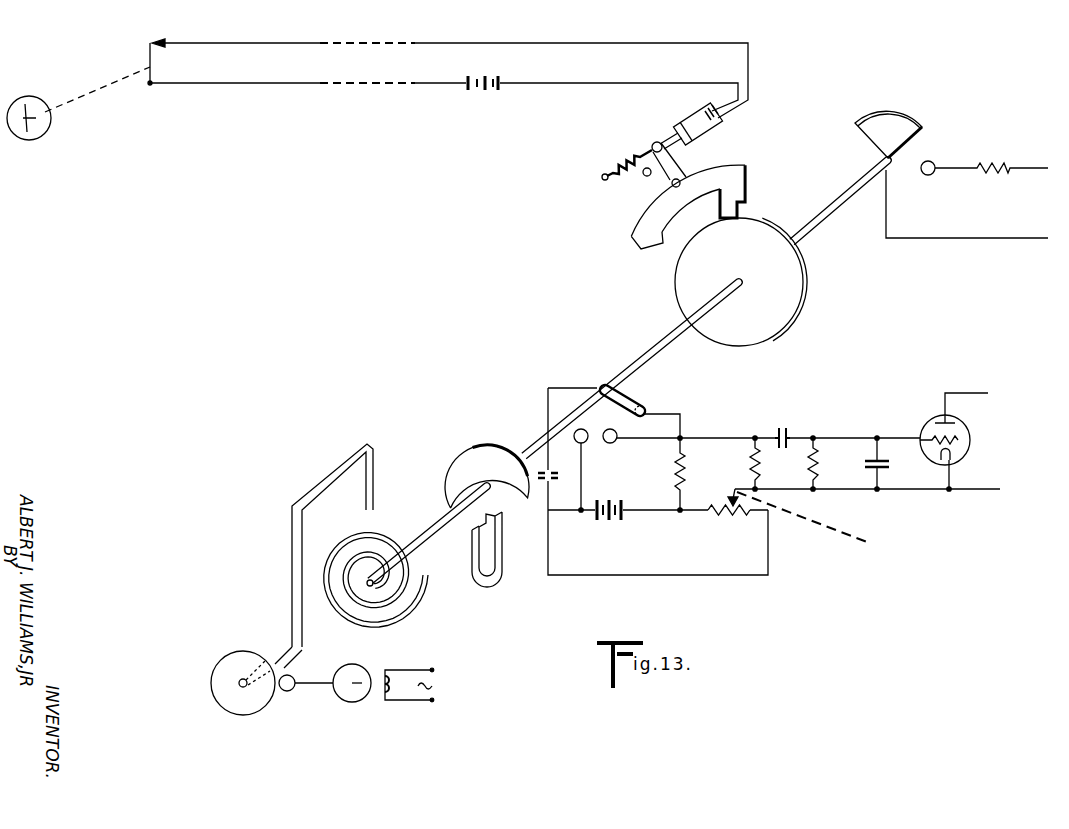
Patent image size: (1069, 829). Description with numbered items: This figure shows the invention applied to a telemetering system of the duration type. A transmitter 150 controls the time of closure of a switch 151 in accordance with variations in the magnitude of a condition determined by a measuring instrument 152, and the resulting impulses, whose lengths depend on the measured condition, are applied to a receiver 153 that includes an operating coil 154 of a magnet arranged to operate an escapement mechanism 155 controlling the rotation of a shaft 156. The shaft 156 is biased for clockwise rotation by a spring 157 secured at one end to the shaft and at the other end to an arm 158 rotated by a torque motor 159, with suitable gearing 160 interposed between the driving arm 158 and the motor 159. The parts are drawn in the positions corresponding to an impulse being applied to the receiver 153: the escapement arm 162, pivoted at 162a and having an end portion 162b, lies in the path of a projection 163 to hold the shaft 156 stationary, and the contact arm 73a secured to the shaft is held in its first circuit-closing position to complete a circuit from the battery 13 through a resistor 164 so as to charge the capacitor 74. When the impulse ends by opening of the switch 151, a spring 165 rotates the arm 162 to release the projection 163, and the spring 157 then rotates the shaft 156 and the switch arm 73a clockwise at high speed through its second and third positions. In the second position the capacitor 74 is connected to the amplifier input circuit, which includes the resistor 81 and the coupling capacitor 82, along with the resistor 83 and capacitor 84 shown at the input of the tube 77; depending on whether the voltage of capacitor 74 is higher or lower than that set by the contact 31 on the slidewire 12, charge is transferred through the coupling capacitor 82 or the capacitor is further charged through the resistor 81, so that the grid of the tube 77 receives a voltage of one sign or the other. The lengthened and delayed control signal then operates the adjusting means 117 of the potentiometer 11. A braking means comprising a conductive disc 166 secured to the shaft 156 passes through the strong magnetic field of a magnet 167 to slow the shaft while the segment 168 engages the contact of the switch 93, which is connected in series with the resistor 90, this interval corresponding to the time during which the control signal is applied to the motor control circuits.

The transmitter 150 is at (112, 129).
The switch 151 is at (149, 50).
The measuring instrument 152 is at (35, 137).
The receiver 153 is at (642, 121).
The operating coil 154 is at (723, 118).
The spring 165 is at (615, 168).
The arm 162 is at (722, 171).
The pivot 162a is at (665, 186).
The brake band end 162b is at (655, 247).
The projection 163 is at (720, 208).
The escapement mechanism 155 is at (812, 198).
The shaft 156 is at (662, 343).
The segment 168 is at (891, 110).
The switch 93 is at (924, 174).
The resistor 90 is at (1011, 150).
The potentiometer 11 is at (672, 568).
The contact arm 73a is at (630, 398).
The capacitor 74 is at (556, 476).
The battery 13 is at (613, 516).
The slidewire 12 is at (725, 518).
The resistor 164 is at (686, 478).
The resistor 81 is at (761, 472).
The coupling capacitor 82 is at (781, 428).
The resistor 83 is at (819, 472).
The capacitor 84 is at (888, 464).
The tube 77 is at (968, 445).
The contact 31 is at (728, 496).
The adjusting means 117 is at (827, 534).
The conductive disc 166 is at (463, 464).
The magnet 167 is at (489, 576).
The spring 157 is at (407, 615).
The arm 158 is at (291, 553).
The gearing 160 is at (248, 655).
The torque motor 159 is at (351, 703).